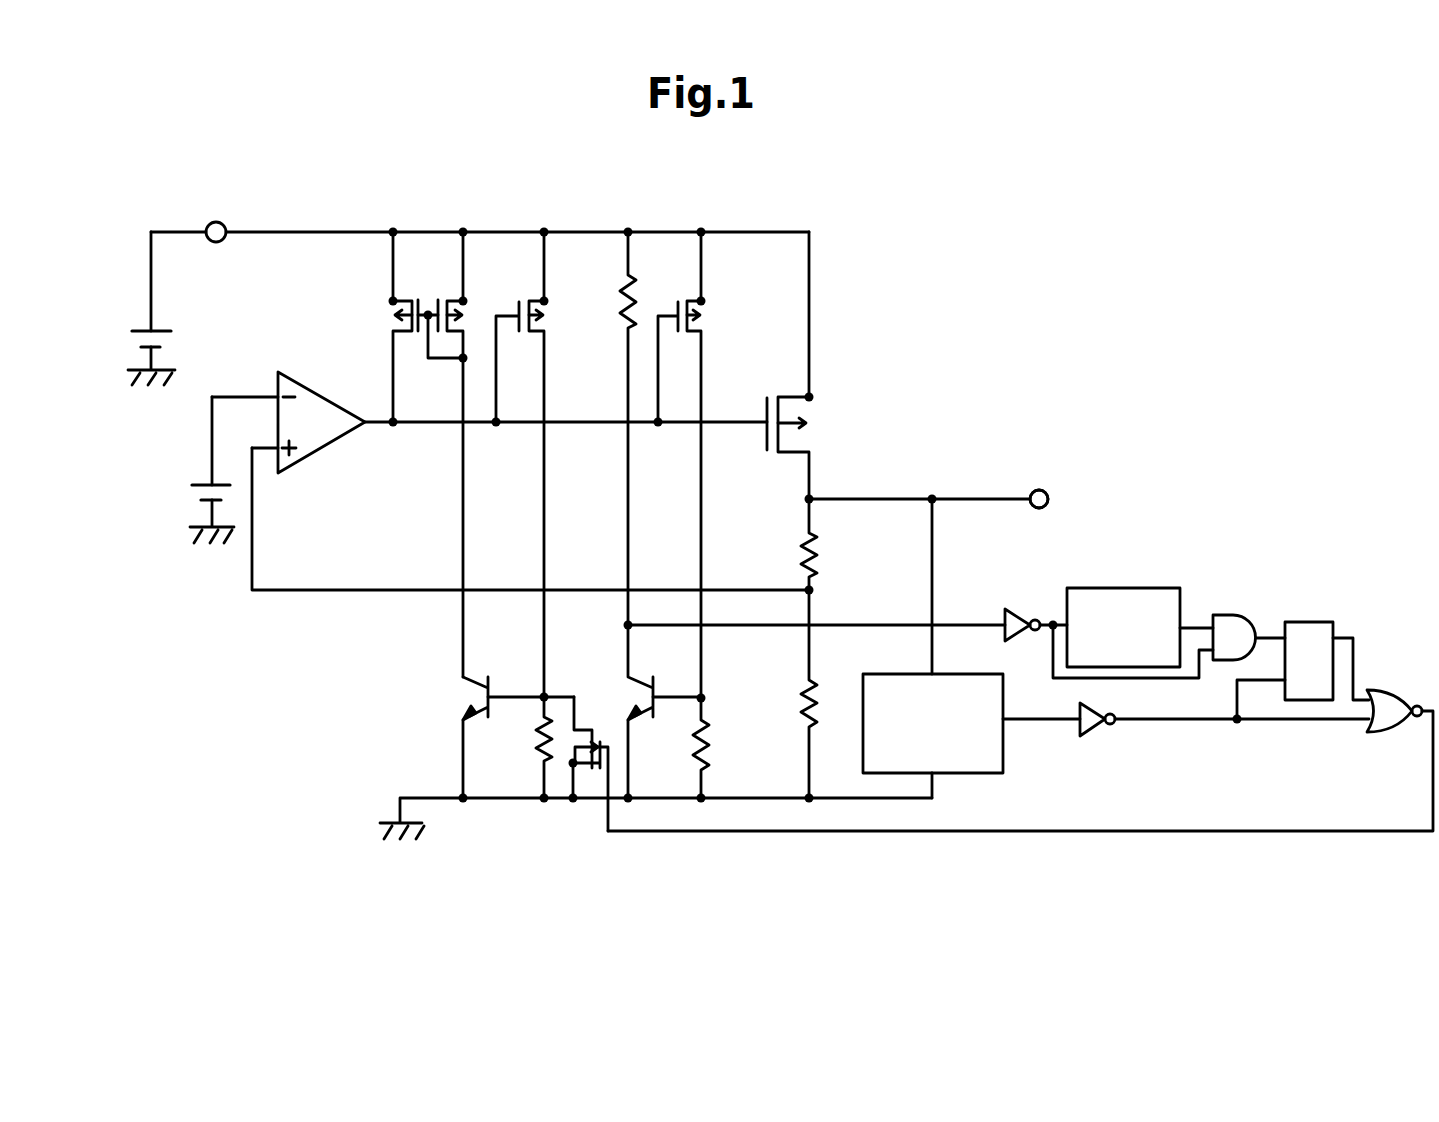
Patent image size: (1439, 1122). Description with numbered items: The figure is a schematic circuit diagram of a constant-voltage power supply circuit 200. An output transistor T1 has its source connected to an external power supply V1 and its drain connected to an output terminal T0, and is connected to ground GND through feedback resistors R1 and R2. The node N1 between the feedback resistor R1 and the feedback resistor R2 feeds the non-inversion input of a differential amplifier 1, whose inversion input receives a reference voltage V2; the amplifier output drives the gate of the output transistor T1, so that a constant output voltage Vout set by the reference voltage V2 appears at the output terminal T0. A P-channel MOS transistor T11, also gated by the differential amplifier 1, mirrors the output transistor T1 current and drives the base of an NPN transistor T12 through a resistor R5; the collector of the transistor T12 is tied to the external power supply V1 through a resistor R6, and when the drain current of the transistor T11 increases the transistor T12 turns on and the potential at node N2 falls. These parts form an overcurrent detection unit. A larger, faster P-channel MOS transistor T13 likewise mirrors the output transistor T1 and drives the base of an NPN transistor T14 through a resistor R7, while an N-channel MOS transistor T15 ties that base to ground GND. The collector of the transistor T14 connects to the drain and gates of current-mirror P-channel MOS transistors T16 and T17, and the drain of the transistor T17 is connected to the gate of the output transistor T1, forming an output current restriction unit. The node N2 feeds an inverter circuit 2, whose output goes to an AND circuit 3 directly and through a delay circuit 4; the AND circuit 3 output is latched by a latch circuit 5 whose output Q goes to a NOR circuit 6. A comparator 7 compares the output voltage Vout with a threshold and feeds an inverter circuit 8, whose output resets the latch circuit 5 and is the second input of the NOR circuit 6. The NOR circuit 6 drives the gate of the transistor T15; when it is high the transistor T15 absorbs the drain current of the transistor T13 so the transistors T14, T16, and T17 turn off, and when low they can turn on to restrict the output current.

The differential amplifier 1 is at (312, 393).
The inverter circuit 2 is at (1008, 604).
The AND circuit 3 is at (1226, 616).
The delay circuit 4 is at (1125, 588).
The latch circuit 5 is at (1303, 622).
The NOR circuit 6 is at (1385, 690).
The comparator 7 is at (1003, 766).
The inverter circuit 8 is at (1092, 734).
The constant-voltage power supply circuit 200 is at (1072, 312).
The output transistor T1 is at (800, 451).
The P-channel MOS transistor T11 is at (700, 330).
The NPN transistor T12 is at (672, 668).
The P-channel MOS transistor T13 is at (535, 316).
The NPN transistor T14 is at (479, 679).
The N-channel MOS transistor T15 is at (583, 725).
The P-channel MOS transistor T16 is at (452, 296).
The P-channel MOS transistor T17 is at (403, 296).
The feedback resistor R1 is at (813, 541).
The feedback resistor R2 is at (815, 684).
The resistor R5 is at (708, 733).
The resistor R6 is at (633, 273).
The resistor R7 is at (541, 760).
The external power supply V1 is at (150, 330).
The reference voltage V2 is at (206, 485).
The node N1 is at (551, 527).
The node N2 is at (796, 625).
The output voltage Vout is at (959, 498).
The output terminal T0 is at (1046, 507).
The ground GND is at (627, 817).